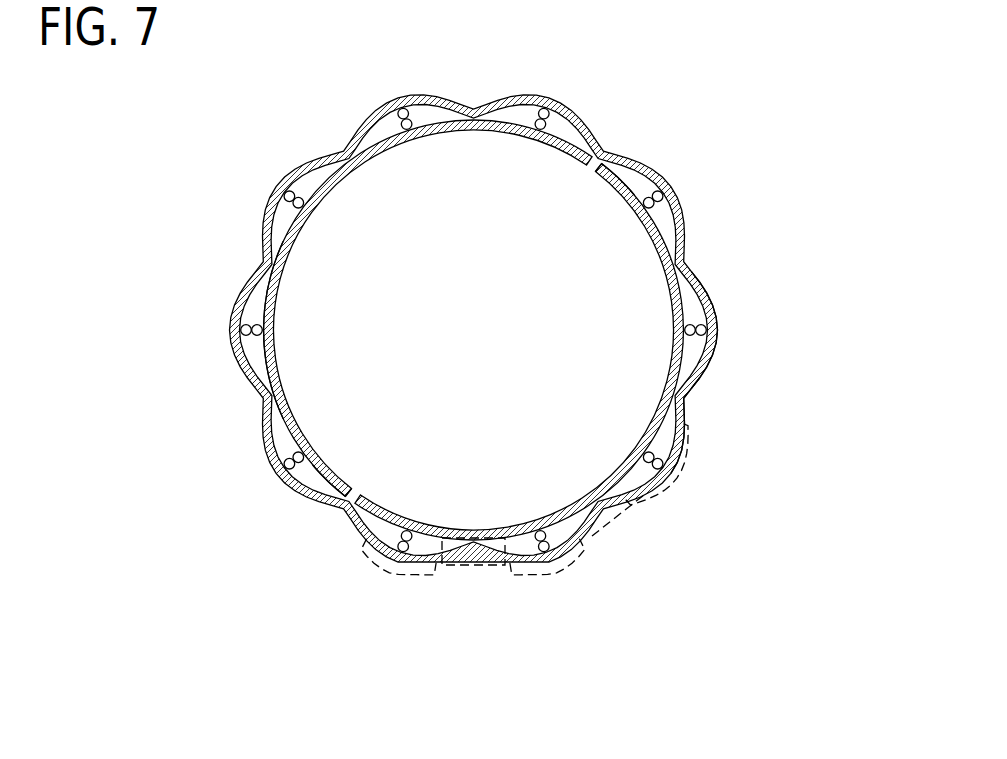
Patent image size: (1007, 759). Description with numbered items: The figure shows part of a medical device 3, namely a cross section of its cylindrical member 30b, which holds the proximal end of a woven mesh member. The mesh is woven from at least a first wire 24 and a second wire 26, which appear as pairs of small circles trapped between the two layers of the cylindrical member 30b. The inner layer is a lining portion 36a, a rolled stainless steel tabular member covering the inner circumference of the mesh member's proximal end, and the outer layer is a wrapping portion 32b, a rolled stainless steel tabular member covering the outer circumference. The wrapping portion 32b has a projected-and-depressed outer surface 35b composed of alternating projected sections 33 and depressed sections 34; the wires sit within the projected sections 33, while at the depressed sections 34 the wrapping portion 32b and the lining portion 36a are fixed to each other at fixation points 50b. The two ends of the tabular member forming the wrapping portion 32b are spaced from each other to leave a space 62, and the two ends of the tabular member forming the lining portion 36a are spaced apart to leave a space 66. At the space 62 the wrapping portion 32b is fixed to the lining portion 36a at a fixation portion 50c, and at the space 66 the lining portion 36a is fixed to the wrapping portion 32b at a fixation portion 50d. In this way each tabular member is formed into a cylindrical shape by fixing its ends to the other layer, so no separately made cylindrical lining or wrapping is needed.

The medical device 3 is at (295, 120).
The first wire 24 is at (409, 113).
The second wire 26 is at (412, 124).
The cylindrical member 30b is at (741, 212).
The wrapping portion 32b is at (722, 334).
The projected sections 33 is at (653, 512).
The depressed sections 34 is at (590, 494).
The projected-and-depressed outer surface 35b is at (688, 400).
The lining portion 36a is at (382, 178).
The fixation points 50b is at (281, 271).
The fixation portion 50c is at (592, 177).
The fixation portion 50d is at (340, 514).
The space 62 is at (607, 150).
The space 66 is at (359, 493).